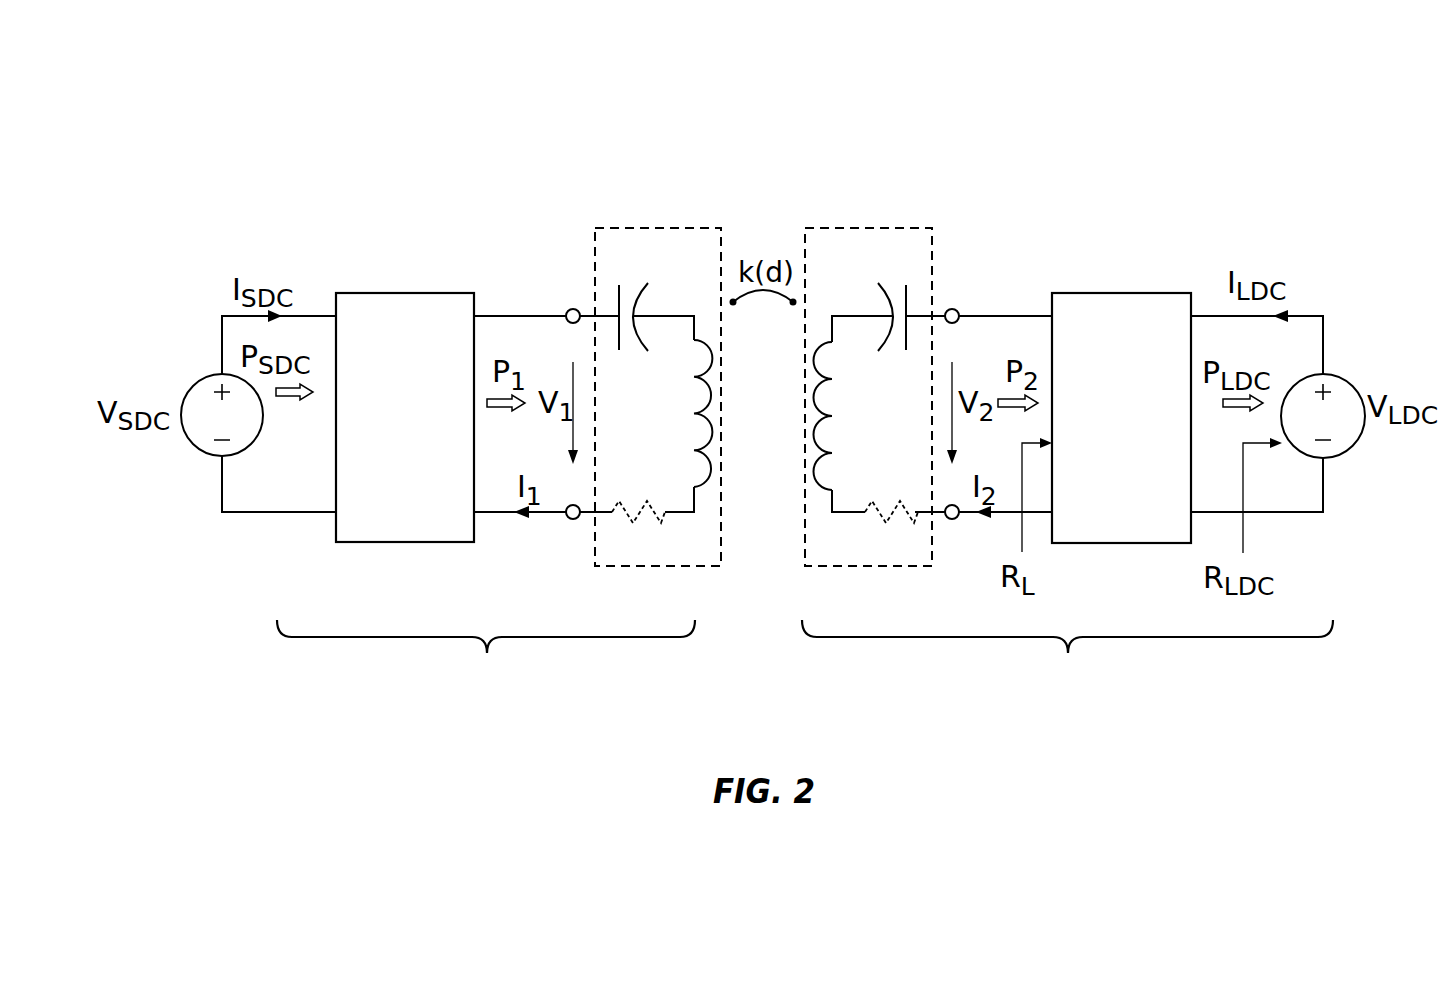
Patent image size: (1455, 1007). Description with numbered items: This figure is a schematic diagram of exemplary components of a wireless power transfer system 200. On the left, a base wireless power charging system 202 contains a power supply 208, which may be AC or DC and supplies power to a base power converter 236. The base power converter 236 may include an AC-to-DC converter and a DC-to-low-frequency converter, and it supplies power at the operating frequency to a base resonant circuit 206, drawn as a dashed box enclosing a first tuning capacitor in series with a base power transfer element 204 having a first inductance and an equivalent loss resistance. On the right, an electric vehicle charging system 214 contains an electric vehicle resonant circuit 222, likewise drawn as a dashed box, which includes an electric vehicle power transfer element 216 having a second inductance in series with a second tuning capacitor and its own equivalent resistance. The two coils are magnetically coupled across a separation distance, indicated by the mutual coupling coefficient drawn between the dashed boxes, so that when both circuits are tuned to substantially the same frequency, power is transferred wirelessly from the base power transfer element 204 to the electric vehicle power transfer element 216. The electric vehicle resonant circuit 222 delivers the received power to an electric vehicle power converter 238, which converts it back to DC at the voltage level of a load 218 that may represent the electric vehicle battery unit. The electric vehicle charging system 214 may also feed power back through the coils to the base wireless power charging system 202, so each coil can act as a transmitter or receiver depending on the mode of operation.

The wireless power transfer system 200 is at (1146, 134).
The base wireless power charging system 202 is at (485, 668).
The base power transfer element 204 is at (712, 483).
The base resonant circuit 206 is at (612, 228).
The power supply 208 is at (207, 381).
The electric vehicle charging system 214 is at (1067, 686).
The electric vehicle power transfer element 216 is at (816, 401).
The load 218 is at (1338, 378).
The electric vehicle resonant circuit 222 is at (831, 228).
The base power converter 236 is at (404, 293).
The electric vehicle power converter 238 is at (1070, 293).